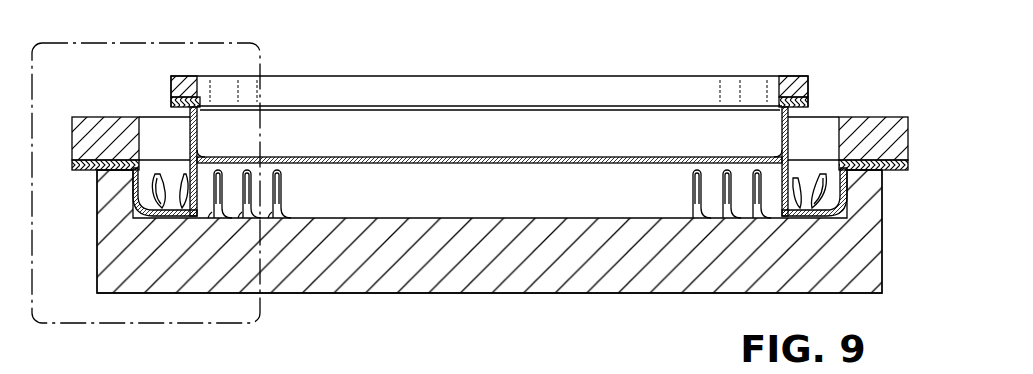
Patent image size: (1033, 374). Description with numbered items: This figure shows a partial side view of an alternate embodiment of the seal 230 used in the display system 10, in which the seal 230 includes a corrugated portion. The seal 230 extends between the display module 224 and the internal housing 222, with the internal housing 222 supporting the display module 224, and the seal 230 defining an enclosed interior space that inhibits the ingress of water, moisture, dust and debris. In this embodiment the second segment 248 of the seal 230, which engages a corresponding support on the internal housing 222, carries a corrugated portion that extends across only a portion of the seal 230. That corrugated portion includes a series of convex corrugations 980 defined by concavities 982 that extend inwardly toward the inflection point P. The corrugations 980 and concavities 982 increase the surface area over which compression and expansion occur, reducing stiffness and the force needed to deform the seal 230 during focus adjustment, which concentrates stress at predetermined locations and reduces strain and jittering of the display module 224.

The display system 10 is at (158, 43).
The display module 224 is at (547, 77).
The internal housing 222 is at (883, 257).
The seal 230 is at (480, 218).
The second segment 248 is at (135, 198).
The convex corrugations 980 is at (192, 222).
The concavities 982 is at (210, 220).
The inflection point P is at (172, 214).